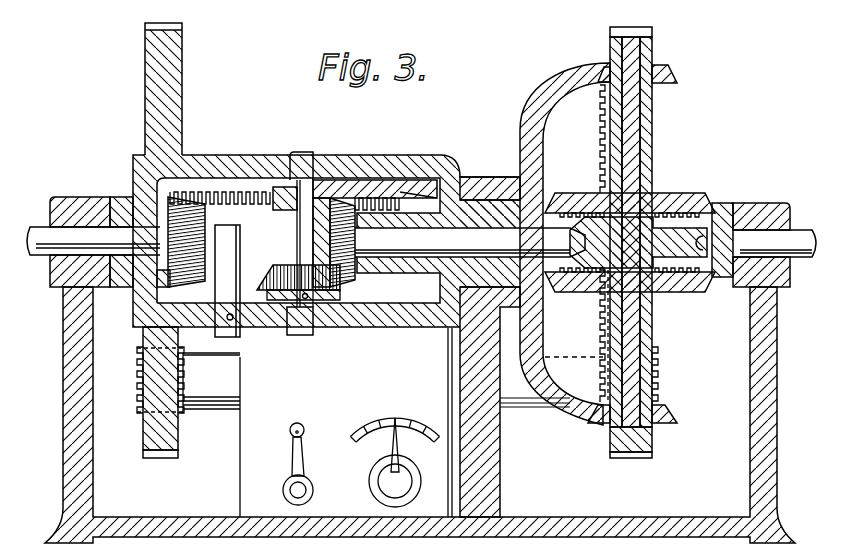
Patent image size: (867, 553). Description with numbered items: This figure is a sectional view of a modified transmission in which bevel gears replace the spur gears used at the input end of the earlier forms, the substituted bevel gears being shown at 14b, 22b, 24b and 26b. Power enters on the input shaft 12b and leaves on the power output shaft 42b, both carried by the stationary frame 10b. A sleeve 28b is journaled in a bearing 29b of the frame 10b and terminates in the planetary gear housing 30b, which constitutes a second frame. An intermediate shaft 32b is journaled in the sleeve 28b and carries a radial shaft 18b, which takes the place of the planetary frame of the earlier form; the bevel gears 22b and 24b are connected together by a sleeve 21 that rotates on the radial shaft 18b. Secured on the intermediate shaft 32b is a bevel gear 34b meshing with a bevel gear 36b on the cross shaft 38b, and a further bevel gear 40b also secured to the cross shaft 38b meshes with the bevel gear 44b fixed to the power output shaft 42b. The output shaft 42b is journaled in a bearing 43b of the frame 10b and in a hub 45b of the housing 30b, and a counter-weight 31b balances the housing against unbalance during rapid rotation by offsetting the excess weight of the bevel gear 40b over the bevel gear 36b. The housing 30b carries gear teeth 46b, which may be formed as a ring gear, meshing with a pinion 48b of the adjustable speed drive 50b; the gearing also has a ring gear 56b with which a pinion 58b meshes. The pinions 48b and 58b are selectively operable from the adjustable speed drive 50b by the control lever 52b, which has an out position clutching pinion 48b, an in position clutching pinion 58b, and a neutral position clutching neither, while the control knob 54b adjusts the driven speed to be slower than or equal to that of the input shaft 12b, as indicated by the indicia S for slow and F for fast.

The frame 10b is at (763, 388).
The input shaft 12b is at (803, 235).
The bevel gear 14b is at (723, 203).
The radial shaft 18b is at (635, 147).
The sleeve 21 is at (653, 173).
The bevel gear 22b is at (675, 285).
The bevel gear 24b is at (675, 72).
The bevel gear 26b is at (565, 84).
The sleeve 28b is at (493, 200).
The bearing 29b is at (468, 175).
The planetary gear housing 30b is at (250, 163).
The counter-weight 31b is at (230, 270).
The intermediate shaft 32b is at (470, 242).
The bevel gear 34b is at (365, 278).
The bevel gear 36b is at (343, 290).
The cross shaft 38b is at (293, 227).
The bevel gear 40b is at (363, 180).
The power output shaft 42b is at (38, 233).
The bearing 43b is at (70, 200).
The bevel gear 44b is at (200, 270).
The hub 45b is at (118, 200).
The gear teeth 46b is at (162, 440).
The pinion 48b is at (138, 398).
The adjustable speed drive 50b is at (355, 367).
The control lever 52b is at (295, 462).
The control knob 54b is at (408, 468).
The ring gear 56b is at (645, 445).
The pinion 58b is at (660, 383).